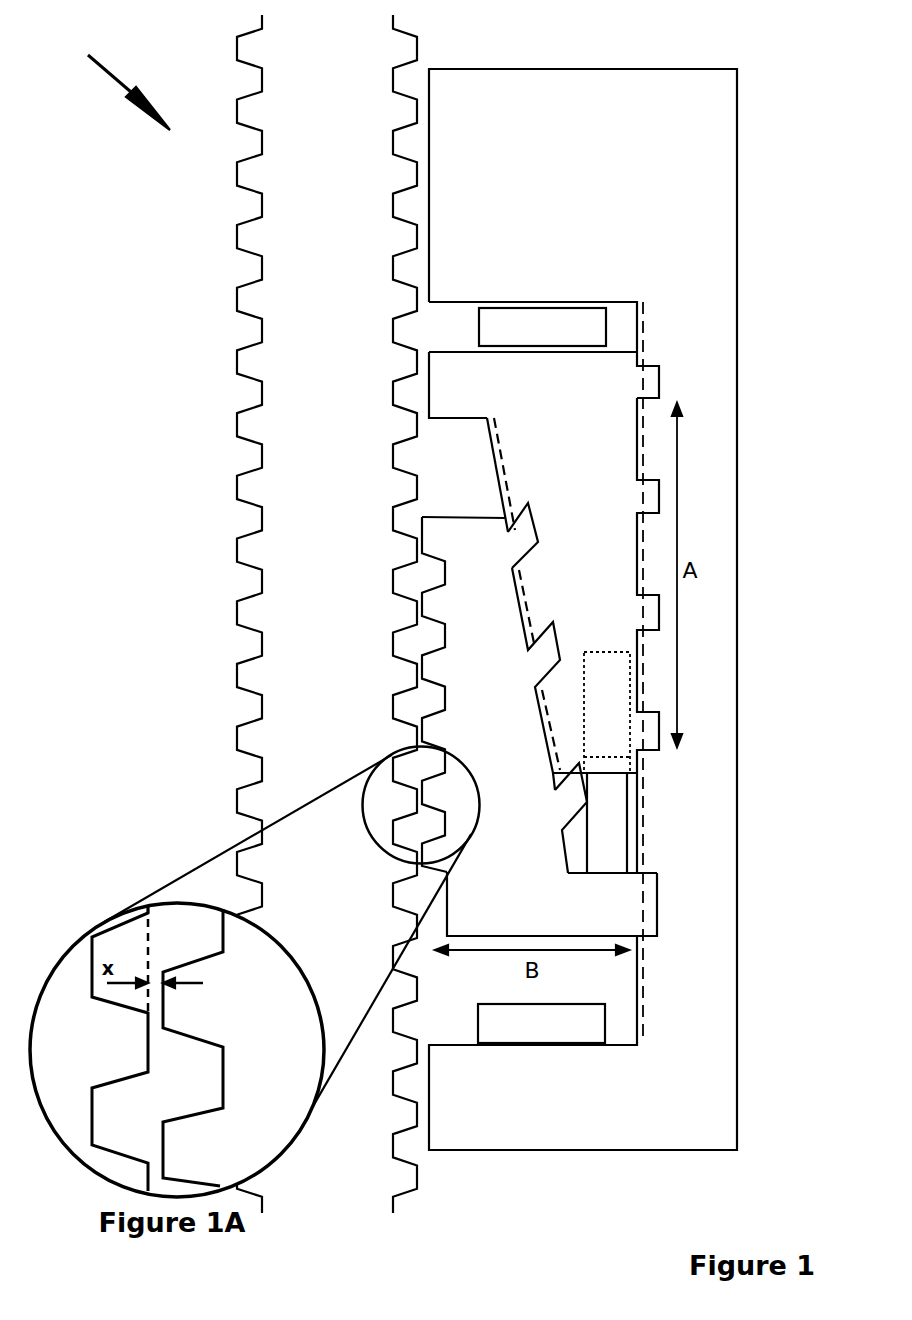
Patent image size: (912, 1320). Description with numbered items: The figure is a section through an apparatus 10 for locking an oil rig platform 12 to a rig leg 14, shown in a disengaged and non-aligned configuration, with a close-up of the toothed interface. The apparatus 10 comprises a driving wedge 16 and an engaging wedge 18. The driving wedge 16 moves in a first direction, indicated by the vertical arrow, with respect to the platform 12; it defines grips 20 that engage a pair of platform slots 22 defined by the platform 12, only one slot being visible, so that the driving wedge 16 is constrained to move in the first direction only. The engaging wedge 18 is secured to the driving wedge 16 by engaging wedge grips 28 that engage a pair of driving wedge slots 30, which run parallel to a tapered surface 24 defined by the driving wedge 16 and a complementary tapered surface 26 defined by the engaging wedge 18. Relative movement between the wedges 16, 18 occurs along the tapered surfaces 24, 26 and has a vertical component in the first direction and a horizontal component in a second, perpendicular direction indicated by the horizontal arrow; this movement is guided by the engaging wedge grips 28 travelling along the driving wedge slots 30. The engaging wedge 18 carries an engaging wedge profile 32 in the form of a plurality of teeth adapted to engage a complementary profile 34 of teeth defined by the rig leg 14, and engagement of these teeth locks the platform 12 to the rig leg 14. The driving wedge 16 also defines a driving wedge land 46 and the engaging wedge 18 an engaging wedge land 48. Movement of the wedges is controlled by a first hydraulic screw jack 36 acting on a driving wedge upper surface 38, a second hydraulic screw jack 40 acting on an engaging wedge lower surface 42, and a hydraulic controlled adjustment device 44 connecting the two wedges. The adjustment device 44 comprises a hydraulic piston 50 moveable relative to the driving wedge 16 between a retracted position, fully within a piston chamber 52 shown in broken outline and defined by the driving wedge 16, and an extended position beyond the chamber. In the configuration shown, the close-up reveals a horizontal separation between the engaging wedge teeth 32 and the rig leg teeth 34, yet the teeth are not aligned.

The apparatus 10 is at (114, 80).
The oil rig platform 12 is at (697, 132).
The rig leg 14 is at (282, 614).
The driving wedge 16 is at (470, 515).
The engaging wedge 18 is at (473, 672).
The grips 20 is at (650, 382).
The platform slots 22 is at (642, 773).
The tapered surface 24 is at (495, 468).
The complementary tapered surface 26 is at (571, 852).
The engaging wedge grips 28 is at (513, 533).
The driving wedge slots 30 is at (530, 605).
The engaging wedge profile 32 is at (433, 720).
The complementary profile 34 is at (258, 735).
The first hydraulic screw jack 36 is at (565, 327).
The driving wedge upper surface 38 is at (448, 350).
The second hydraulic screw jack 40 is at (543, 1027).
The engaging wedge lower surface 42 is at (636, 919).
The hydraulic controlled adjustment device 44 is at (601, 816).
The driving wedge land 46 is at (447, 362).
The engaging wedge land 48 is at (609, 886).
The hydraulic piston 50 is at (620, 798).
The piston chamber 52 is at (607, 685).